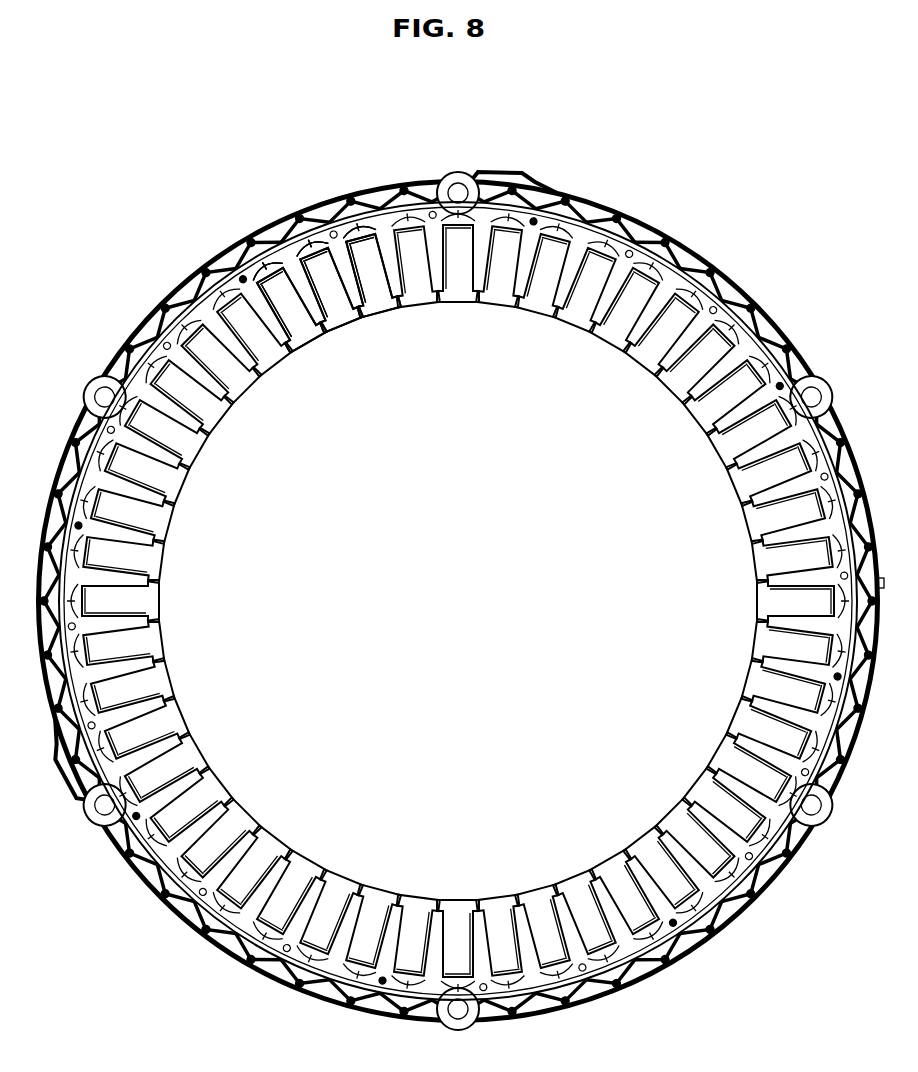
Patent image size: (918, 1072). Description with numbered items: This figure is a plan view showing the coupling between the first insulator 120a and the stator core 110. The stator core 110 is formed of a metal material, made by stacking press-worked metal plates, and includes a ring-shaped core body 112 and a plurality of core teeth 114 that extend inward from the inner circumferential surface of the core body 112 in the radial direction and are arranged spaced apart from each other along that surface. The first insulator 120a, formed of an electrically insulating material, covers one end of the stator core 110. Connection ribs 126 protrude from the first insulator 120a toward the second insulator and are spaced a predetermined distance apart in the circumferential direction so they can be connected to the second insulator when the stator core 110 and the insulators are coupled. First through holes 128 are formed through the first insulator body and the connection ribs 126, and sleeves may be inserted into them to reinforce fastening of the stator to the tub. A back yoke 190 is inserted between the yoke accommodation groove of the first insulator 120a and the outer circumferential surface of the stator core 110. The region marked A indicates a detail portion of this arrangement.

The stator core 110 is at (406, 314).
The core body 112 is at (300, 290).
The core teeth 114 is at (262, 247).
The back yoke 190 is at (293, 262).
The first insulator 120a is at (548, 178).
The connection ribs 126 is at (447, 178).
The first through holes 128 is at (460, 188).
The enlarged region A is at (280, 167).